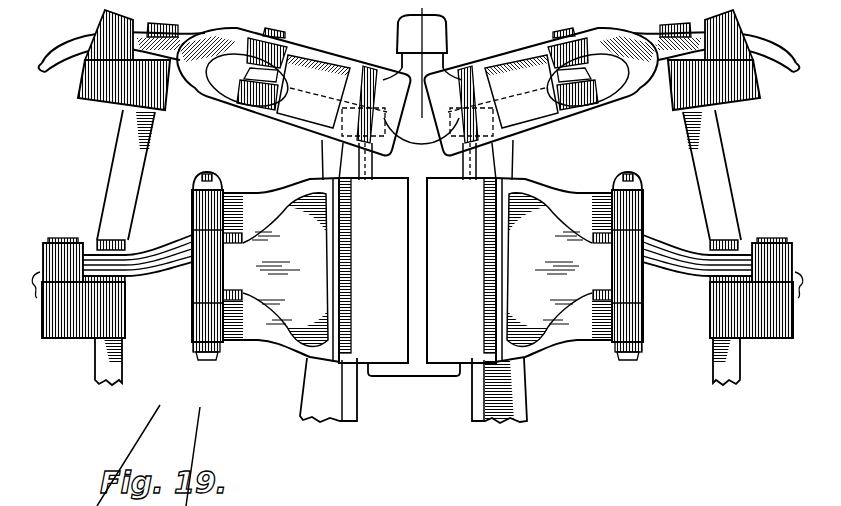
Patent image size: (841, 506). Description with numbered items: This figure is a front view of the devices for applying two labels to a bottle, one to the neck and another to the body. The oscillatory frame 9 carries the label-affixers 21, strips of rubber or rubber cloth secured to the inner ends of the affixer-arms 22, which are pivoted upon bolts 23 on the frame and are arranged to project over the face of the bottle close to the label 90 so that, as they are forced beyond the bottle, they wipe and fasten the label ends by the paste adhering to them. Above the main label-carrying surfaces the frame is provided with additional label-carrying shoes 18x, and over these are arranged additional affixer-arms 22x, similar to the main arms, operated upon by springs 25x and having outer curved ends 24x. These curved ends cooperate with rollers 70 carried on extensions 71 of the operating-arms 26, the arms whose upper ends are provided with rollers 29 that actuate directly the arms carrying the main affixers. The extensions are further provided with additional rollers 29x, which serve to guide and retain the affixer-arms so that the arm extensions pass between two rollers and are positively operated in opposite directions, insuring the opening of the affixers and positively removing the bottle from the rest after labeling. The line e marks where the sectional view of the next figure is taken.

The oscillatory frame 9 is at (343, 401).
The additional label-carrying shoes 18x is at (513, 147).
The label-affixers 21 is at (417, 277).
The affixer-arms 22 is at (417, 270).
The additional affixer-arms 22x is at (344, 60).
The bolts 23 is at (210, 352).
The outer curved ends 24x is at (62, 53).
The springs 25x is at (250, 73).
The operating-arms 26 is at (94, 366).
The rollers 29 is at (127, 252).
The additional rollers 29x is at (42, 252).
The rollers 70 is at (102, 26).
The extensions 71 is at (136, 160).
The label 90 is at (422, 93).
The section line e is at (168, 22).